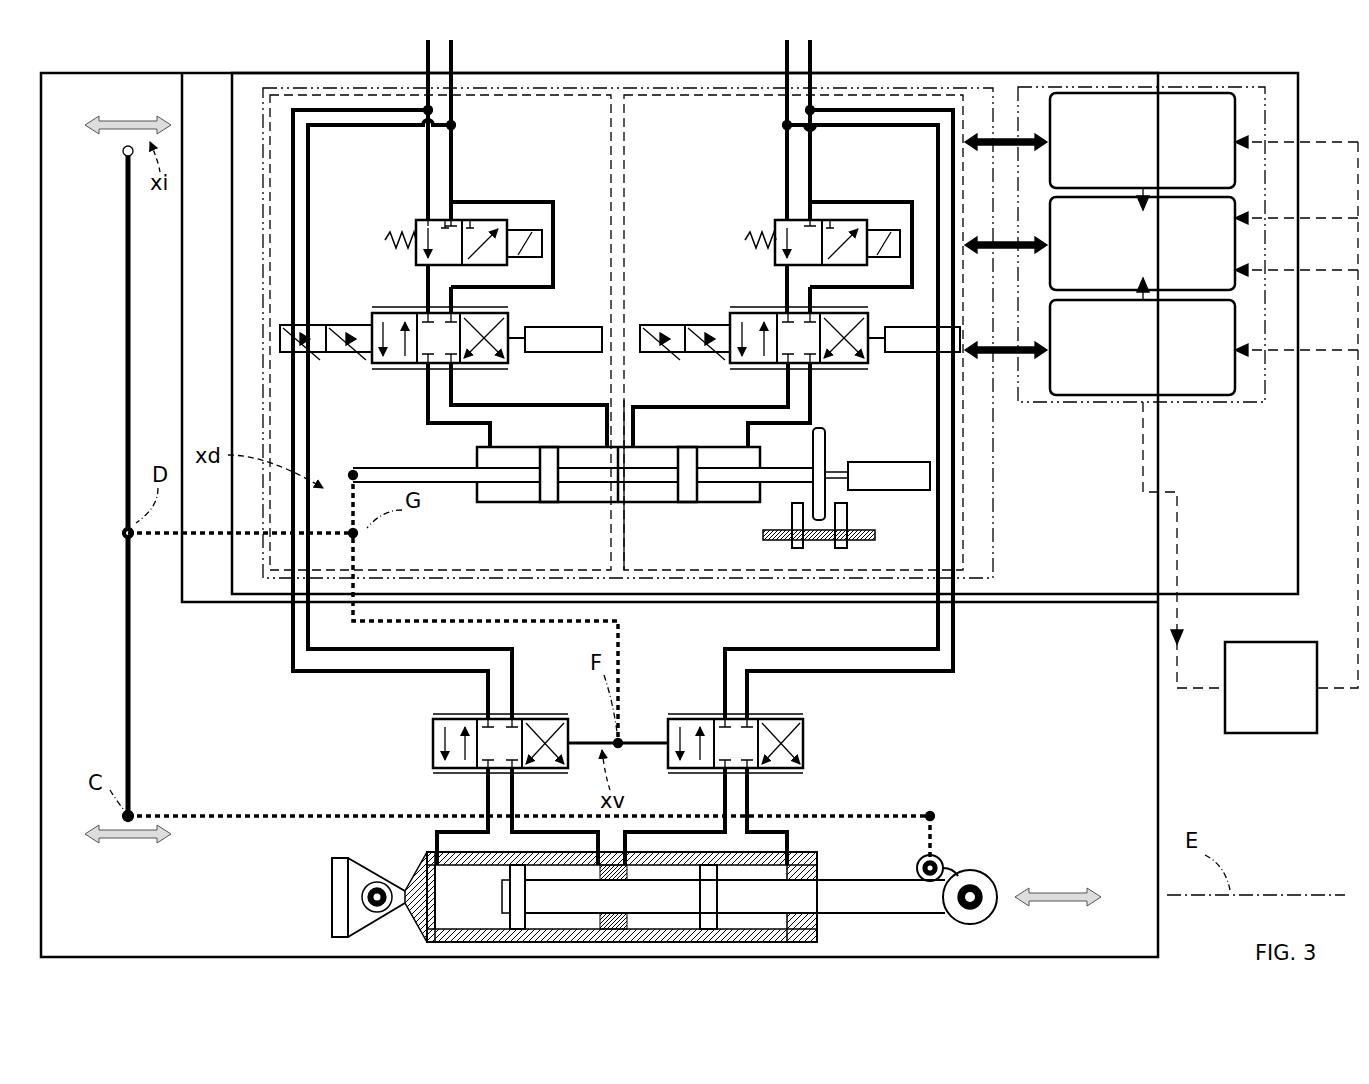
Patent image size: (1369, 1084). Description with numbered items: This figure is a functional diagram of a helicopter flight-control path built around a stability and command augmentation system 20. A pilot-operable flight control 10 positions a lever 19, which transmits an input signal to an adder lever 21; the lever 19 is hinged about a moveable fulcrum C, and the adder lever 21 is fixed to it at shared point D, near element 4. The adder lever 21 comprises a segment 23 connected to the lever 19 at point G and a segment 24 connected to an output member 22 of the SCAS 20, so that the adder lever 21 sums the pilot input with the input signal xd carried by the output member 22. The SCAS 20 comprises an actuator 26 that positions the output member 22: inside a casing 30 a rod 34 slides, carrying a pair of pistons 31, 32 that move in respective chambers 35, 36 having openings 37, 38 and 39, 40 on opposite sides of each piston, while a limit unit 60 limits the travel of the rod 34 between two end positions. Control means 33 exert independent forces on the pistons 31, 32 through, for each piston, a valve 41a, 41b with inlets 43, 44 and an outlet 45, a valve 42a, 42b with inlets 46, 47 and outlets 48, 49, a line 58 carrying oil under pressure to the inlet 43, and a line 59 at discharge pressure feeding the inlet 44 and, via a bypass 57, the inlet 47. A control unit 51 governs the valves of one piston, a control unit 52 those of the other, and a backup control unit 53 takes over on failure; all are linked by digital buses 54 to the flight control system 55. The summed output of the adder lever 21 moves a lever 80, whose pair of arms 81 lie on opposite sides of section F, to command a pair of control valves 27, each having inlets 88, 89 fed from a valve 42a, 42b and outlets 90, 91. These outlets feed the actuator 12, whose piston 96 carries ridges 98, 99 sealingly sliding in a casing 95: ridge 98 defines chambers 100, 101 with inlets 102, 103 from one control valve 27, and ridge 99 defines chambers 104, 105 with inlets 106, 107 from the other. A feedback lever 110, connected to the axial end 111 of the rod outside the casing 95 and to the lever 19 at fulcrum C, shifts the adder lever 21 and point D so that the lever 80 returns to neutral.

The pivot 4 is at (123, 541).
The pilot-operable flight control 10 is at (128, 155).
The actuator 12 is at (825, 930).
The lever 19 is at (115, 465).
The stability and command augmentation system 20 is at (1305, 448).
The adder lever 21 is at (628, 660).
The output member 22 is at (362, 467).
The segment 23 is at (164, 542).
The segment 24 is at (452, 638).
The actuator 26 is at (472, 518).
The control valves 27 is at (417, 752).
The casing 30 is at (667, 448).
The piston 31 is at (550, 503).
The piston 32 is at (690, 502).
The control means 33 is at (1103, 425).
The rod 34 is at (590, 485).
The chamber 35 is at (528, 468).
The chamber 36 is at (637, 490).
The opening 37 is at (482, 435).
The opening 38 is at (600, 442).
The opening 39 is at (635, 443).
The opening 40 is at (748, 445).
The valve 41a is at (380, 210).
The valve 41b is at (750, 220).
The valve 42a is at (367, 305).
The valve 42b is at (718, 315).
The inlet 43 is at (427, 220).
The inlet 44 is at (454, 220).
The outlet 45 is at (414, 278).
The inlet 46 is at (422, 305).
The inlet 47 is at (458, 313).
The outlet 48 is at (426, 367).
The outlet 49 is at (452, 365).
The control unit 51 is at (1098, 380).
The control unit 52 is at (1205, 112).
The backup control unit 53 is at (1205, 217).
The digital buses 54 is at (1338, 138).
The flight control system 55 is at (1235, 704).
The bypass 57 is at (507, 202).
The line 58 is at (426, 58).
The line 59 is at (453, 59).
The limit unit 60 is at (960, 516).
The lever 80 is at (620, 750).
The arms 81 is at (592, 740).
The inlet 88 is at (482, 718).
The inlet 89 is at (515, 717).
The outlet 90 is at (486, 775).
The outlet 91 is at (514, 770).
The casing 95 is at (372, 860).
The piston 96 is at (865, 894).
The ridge 98 is at (508, 896).
The ridge 99 is at (716, 897).
The chamber 100 is at (430, 910).
The chamber 101 is at (540, 855).
The inlet 102 is at (435, 852).
The inlet 103 is at (588, 868).
The chamber 104 is at (688, 925).
The chamber 105 is at (780, 855).
The inlet 106 is at (625, 866).
The inlet 107 is at (803, 853).
The feedback lever 110 is at (882, 813).
The axial end 111 is at (945, 895).